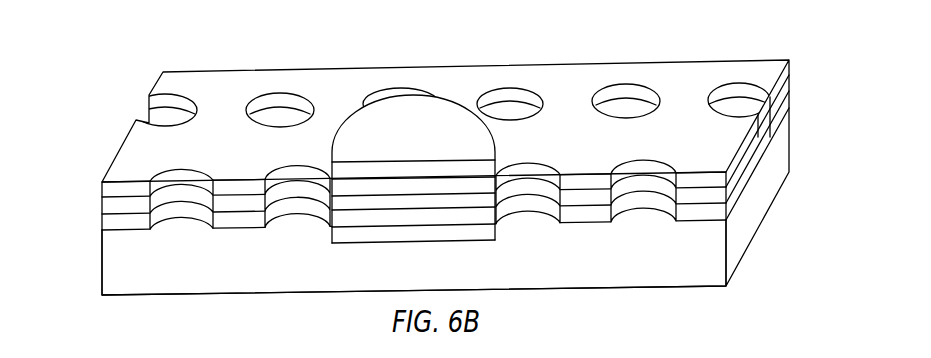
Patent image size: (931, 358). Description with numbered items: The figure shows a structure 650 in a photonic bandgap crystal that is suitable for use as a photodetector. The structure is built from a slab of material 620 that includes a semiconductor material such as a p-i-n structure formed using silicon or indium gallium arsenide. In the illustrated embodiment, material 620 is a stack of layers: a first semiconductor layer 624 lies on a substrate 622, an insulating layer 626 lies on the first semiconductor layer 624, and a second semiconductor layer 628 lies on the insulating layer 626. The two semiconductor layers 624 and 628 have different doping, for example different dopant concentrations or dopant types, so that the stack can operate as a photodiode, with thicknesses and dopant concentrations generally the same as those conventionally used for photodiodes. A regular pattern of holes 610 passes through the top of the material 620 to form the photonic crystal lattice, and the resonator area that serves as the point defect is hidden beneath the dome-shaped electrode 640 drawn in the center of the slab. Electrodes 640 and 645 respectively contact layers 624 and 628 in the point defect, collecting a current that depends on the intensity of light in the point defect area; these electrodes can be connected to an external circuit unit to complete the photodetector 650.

The photodetector structure 650 is at (230, 35).
The holes 610 is at (279, 116).
The material 620 is at (797, 60).
The substrate 622 is at (165, 270).
The first semiconductor layer 624 is at (101, 223).
The insulating layer 626 is at (101, 205).
The second semiconductor layer 628 is at (101, 190).
The electrode 640 is at (430, 138).
The electrode 645 is at (352, 244).